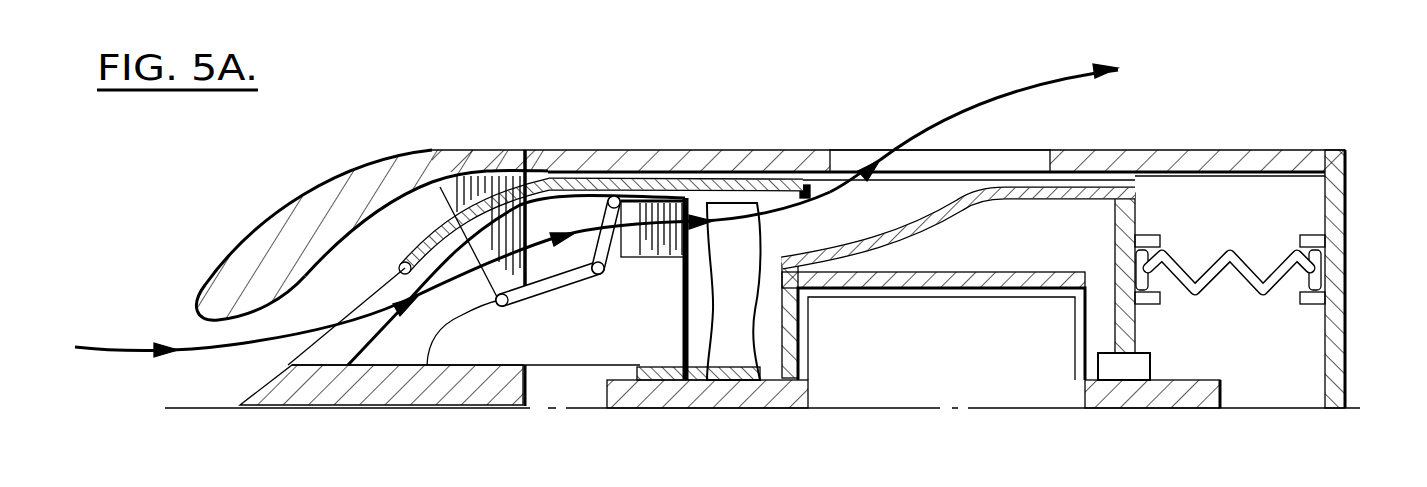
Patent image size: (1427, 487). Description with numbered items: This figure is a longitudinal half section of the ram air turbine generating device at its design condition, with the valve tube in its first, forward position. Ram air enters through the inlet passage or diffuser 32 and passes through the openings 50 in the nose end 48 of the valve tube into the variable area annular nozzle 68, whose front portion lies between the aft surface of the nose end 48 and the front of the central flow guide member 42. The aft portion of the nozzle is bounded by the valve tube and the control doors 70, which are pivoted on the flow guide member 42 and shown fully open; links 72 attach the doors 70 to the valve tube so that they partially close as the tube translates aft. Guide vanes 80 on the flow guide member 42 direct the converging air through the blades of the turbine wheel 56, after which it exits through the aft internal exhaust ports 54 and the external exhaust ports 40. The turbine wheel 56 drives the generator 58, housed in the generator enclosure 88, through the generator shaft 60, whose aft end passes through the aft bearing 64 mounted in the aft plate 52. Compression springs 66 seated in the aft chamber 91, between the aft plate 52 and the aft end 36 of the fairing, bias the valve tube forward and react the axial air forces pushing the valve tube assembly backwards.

The inlet passage or diffuser 32 is at (227, 366).
The aft end 36 is at (1352, 188).
The external exhaust ports 40 is at (835, 163).
The central flow guide member 42 is at (630, 313).
The nose end 48 is at (448, 397).
The openings 50 is at (400, 277).
The aft plate 52 is at (1137, 200).
The aft internal exhaust ports 54 is at (810, 178).
The turbine wheel 56 is at (748, 241).
The generator 58 is at (920, 355).
The generator shaft 60 is at (722, 395).
The aft bearing 64 is at (1137, 368).
The compression springs 66 is at (1245, 262).
The annular nozzle 68 is at (457, 263).
The control doors 70 is at (555, 283).
The links 72 is at (578, 182).
The guide vanes 80 is at (667, 200).
The generator enclosure 88 is at (1030, 275).
The aft chamber 91 is at (1295, 350).